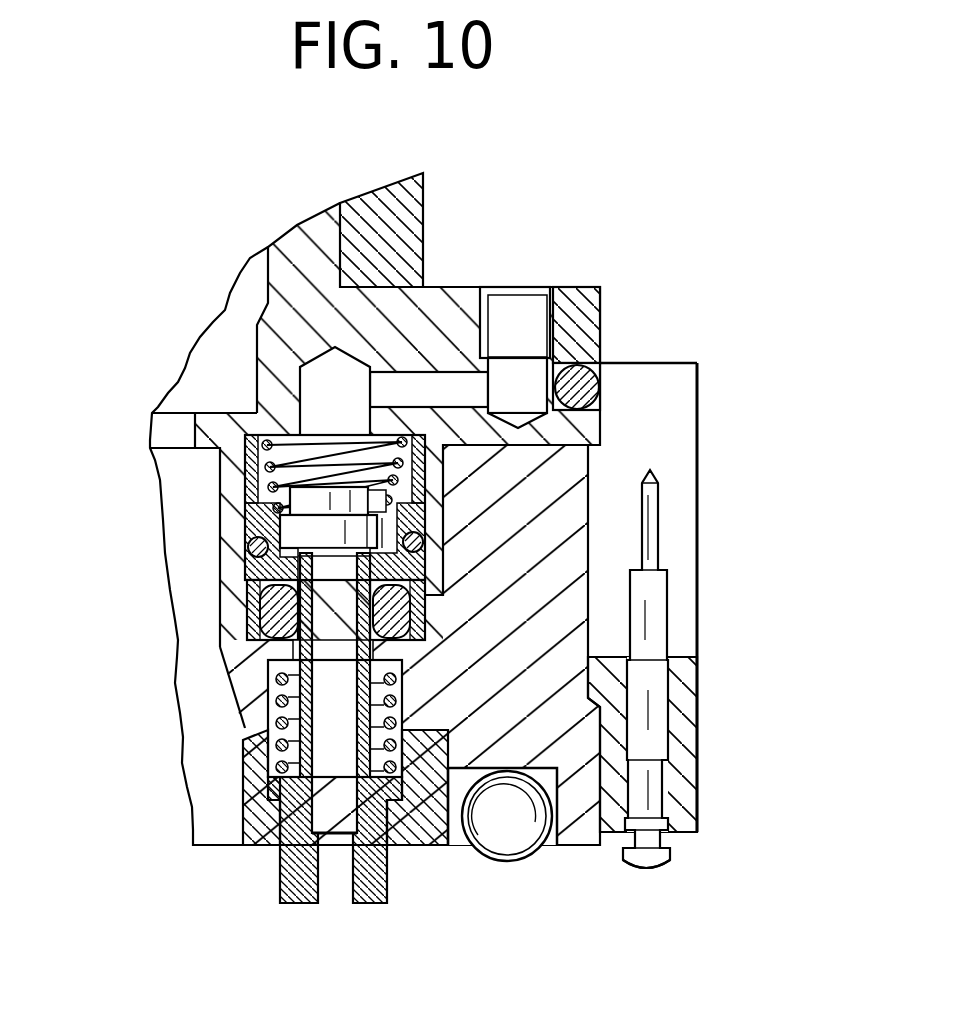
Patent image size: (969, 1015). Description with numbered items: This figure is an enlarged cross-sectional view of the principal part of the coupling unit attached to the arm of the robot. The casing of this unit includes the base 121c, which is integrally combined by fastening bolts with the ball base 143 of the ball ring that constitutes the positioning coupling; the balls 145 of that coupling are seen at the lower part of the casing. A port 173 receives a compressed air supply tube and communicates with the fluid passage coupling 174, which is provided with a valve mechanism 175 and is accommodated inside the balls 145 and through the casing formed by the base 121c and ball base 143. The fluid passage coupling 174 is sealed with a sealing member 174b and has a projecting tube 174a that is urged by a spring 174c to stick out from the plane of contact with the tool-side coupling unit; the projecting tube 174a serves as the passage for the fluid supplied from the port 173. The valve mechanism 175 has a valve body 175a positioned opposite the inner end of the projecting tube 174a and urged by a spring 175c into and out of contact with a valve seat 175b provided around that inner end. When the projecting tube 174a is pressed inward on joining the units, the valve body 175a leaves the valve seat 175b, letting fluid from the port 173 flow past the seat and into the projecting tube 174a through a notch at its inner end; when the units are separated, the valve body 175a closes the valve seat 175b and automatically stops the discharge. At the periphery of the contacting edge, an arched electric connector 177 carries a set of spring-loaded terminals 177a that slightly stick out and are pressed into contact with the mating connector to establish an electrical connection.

The base 121c is at (583, 307).
The ball base 143 is at (550, 482).
The balls 145 is at (515, 823).
The port 173 is at (518, 307).
The fluid passage coupling 174 is at (256, 773).
The projecting tube 174a is at (370, 887).
The sealing member 174b is at (265, 628).
The spring 174c is at (246, 746).
The valve mechanism 175 is at (231, 537).
The valve body 175a is at (297, 528).
The valve seat 175b is at (250, 546).
The spring 175c is at (257, 473).
The arched electric connector 177 is at (709, 660).
The terminals 177a is at (653, 867).